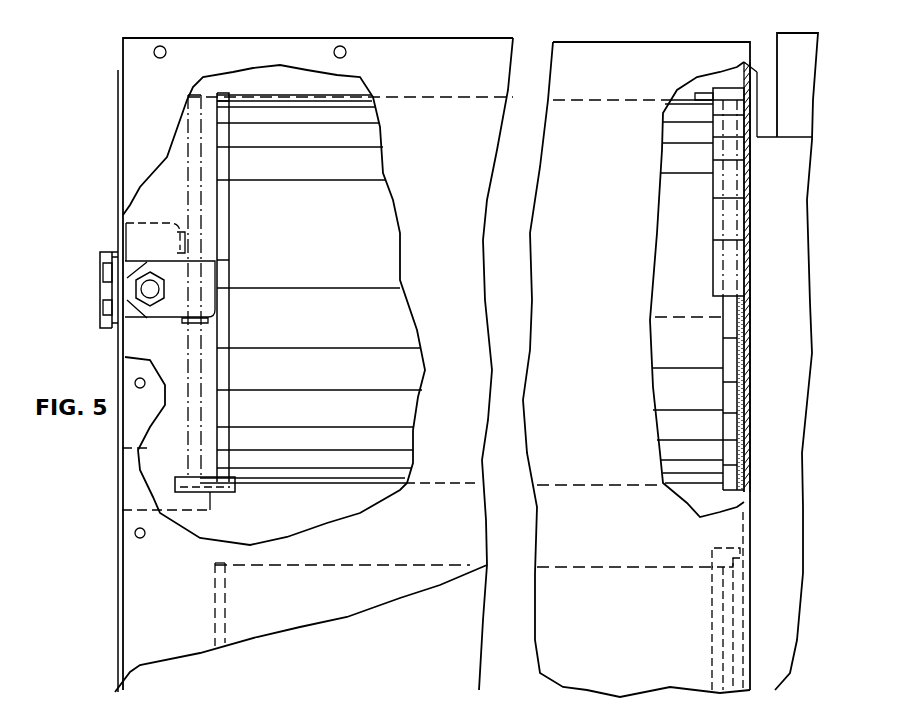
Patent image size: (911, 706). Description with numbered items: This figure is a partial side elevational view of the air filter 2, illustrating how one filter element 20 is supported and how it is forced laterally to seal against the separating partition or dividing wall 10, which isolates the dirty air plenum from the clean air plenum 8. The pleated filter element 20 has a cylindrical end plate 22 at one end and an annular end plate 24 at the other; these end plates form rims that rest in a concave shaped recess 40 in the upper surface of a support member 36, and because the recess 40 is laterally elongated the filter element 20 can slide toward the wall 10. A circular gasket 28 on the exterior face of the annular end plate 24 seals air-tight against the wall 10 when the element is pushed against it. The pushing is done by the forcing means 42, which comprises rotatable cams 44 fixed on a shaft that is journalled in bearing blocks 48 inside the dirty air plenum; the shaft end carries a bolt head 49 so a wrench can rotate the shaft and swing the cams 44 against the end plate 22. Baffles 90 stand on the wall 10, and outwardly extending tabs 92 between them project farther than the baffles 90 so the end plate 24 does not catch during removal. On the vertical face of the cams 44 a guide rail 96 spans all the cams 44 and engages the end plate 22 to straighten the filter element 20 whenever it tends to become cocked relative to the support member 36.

The air filter 2 is at (338, 34).
The clean air plenum 8 is at (777, 598).
The separating partition or dividing wall 10 is at (752, 402).
The filter element 20 is at (362, 236).
The cylindrical end plate 22 is at (220, 94).
The annular end plate 24 is at (722, 393).
The circular gasket 28 is at (740, 364).
The support member 36 is at (228, 492).
The concave shaped recess 40 is at (190, 494).
The forcing means 42 is at (116, 220).
The rotatable cam 44 is at (165, 318).
The bearing block 48 is at (137, 265).
The bolt head 49 is at (157, 290).
The baffle 90 is at (728, 177).
The outwardly extending tab 92 is at (710, 92).
The guide member or rail 96 is at (198, 322).